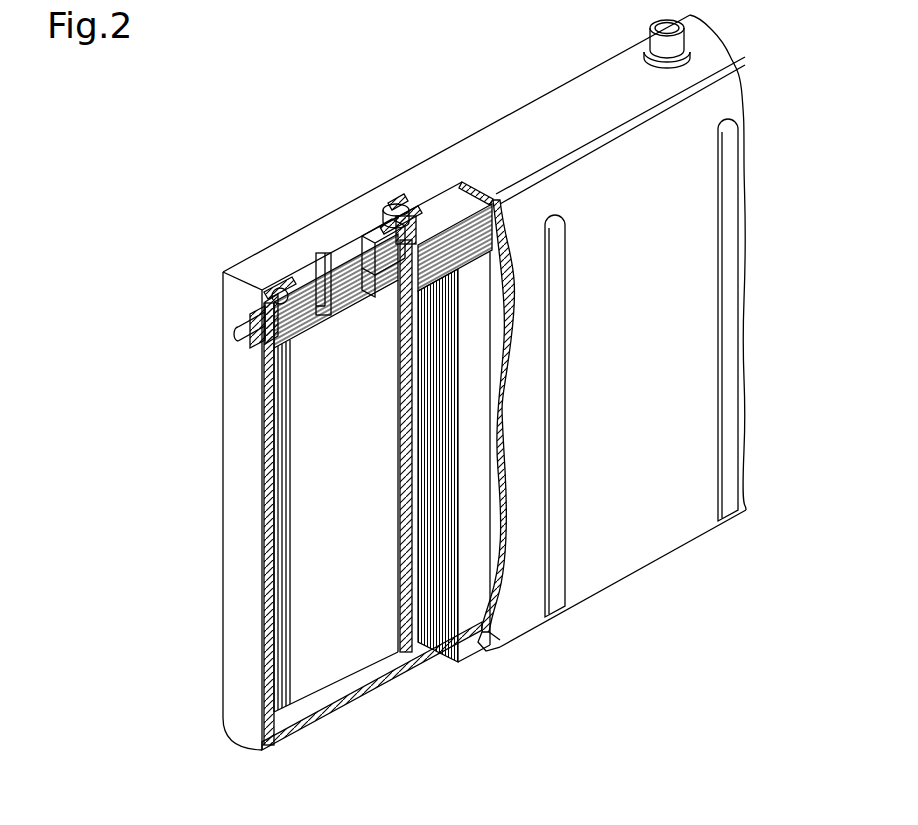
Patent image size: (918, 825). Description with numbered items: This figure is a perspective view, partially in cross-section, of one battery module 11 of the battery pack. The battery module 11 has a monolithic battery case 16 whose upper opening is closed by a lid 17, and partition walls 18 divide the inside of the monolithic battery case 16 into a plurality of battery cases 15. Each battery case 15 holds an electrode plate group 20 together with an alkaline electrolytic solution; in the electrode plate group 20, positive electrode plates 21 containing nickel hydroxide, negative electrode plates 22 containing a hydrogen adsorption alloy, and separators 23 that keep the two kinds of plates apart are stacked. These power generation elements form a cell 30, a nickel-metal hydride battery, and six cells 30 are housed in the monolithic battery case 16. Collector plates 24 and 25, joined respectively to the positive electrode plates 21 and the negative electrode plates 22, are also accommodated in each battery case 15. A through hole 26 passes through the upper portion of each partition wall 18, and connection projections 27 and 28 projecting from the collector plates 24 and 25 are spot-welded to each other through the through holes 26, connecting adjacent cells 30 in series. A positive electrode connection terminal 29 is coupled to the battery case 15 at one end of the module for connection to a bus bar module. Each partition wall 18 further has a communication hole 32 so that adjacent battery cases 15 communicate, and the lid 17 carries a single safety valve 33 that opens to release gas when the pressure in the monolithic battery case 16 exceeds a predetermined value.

The battery module 11 is at (236, 500).
The battery case 15 is at (460, 190).
The monolithic battery case 16 is at (650, 557).
The lid 17 is at (562, 90).
The partition wall 18 is at (414, 324).
The electrode plate group 20 is at (414, 526).
The positive electrode plate 21 is at (269, 524).
The negative electrode plate 22 is at (372, 686).
The separator 23 is at (327, 672).
The collector plate 24 is at (223, 272).
The collector plate 25 is at (362, 234).
The through hole 26 is at (390, 262).
The connection projection 27 is at (412, 214).
The connection projection 28 is at (394, 216).
The positive electrode connection terminal 29 is at (236, 334).
The cell 30 is at (343, 474).
The communication hole 32 is at (390, 226).
The safety valve 33 is at (650, 27).